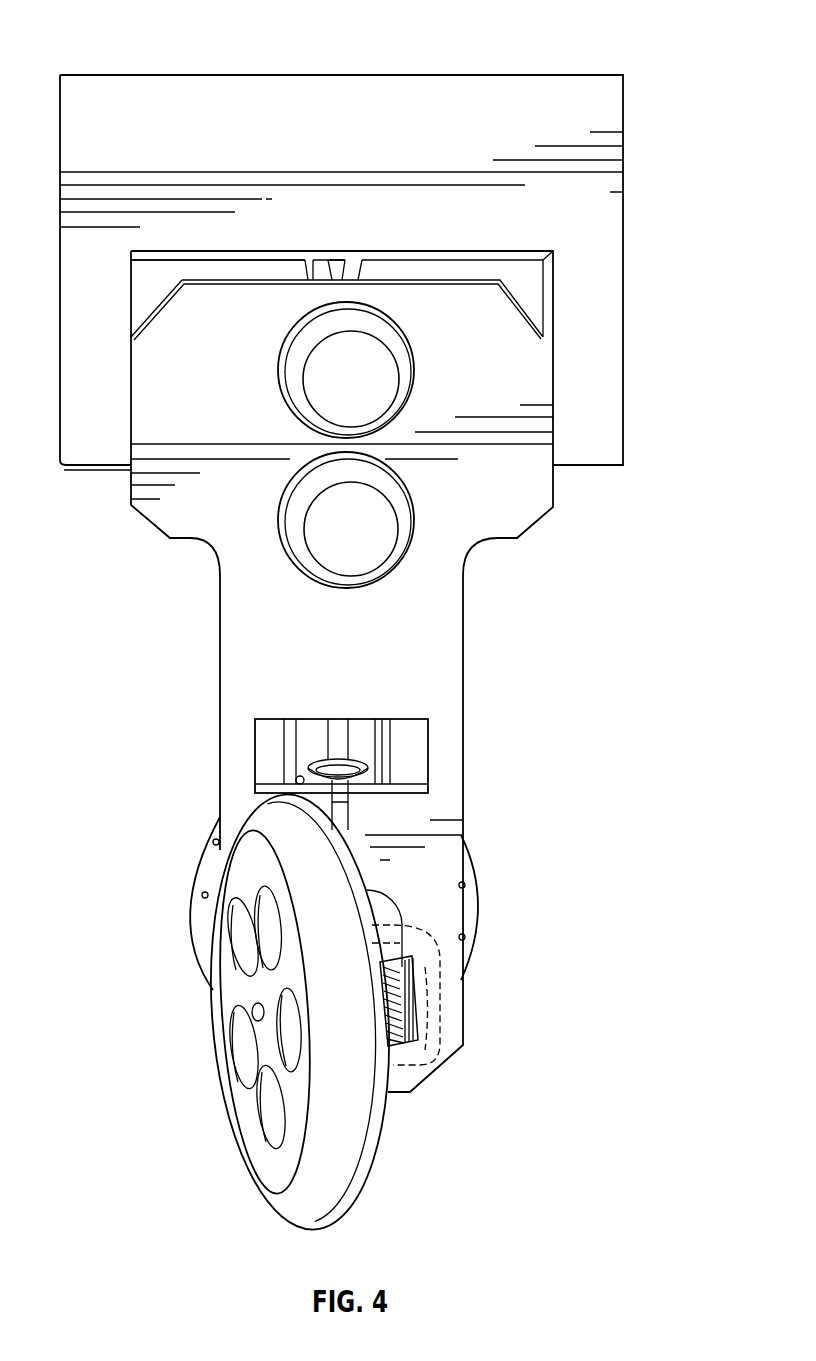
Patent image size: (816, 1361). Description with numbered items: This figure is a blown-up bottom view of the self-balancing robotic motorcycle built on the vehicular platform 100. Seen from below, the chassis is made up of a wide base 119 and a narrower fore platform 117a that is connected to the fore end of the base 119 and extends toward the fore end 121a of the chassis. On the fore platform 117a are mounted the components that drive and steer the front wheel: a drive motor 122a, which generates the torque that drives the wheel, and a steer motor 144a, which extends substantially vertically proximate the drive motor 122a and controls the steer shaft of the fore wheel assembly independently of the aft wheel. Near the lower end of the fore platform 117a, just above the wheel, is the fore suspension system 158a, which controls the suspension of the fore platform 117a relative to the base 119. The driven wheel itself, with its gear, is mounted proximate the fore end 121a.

The vehicular platform 100 is at (598, 36).
The base 119 is at (607, 190).
The drive motor 122a is at (400, 378).
The steer motor 144a is at (400, 535).
The fore platform 117a is at (455, 637).
The fore suspension system 158a is at (370, 776).
The fore end 121a is at (447, 977).